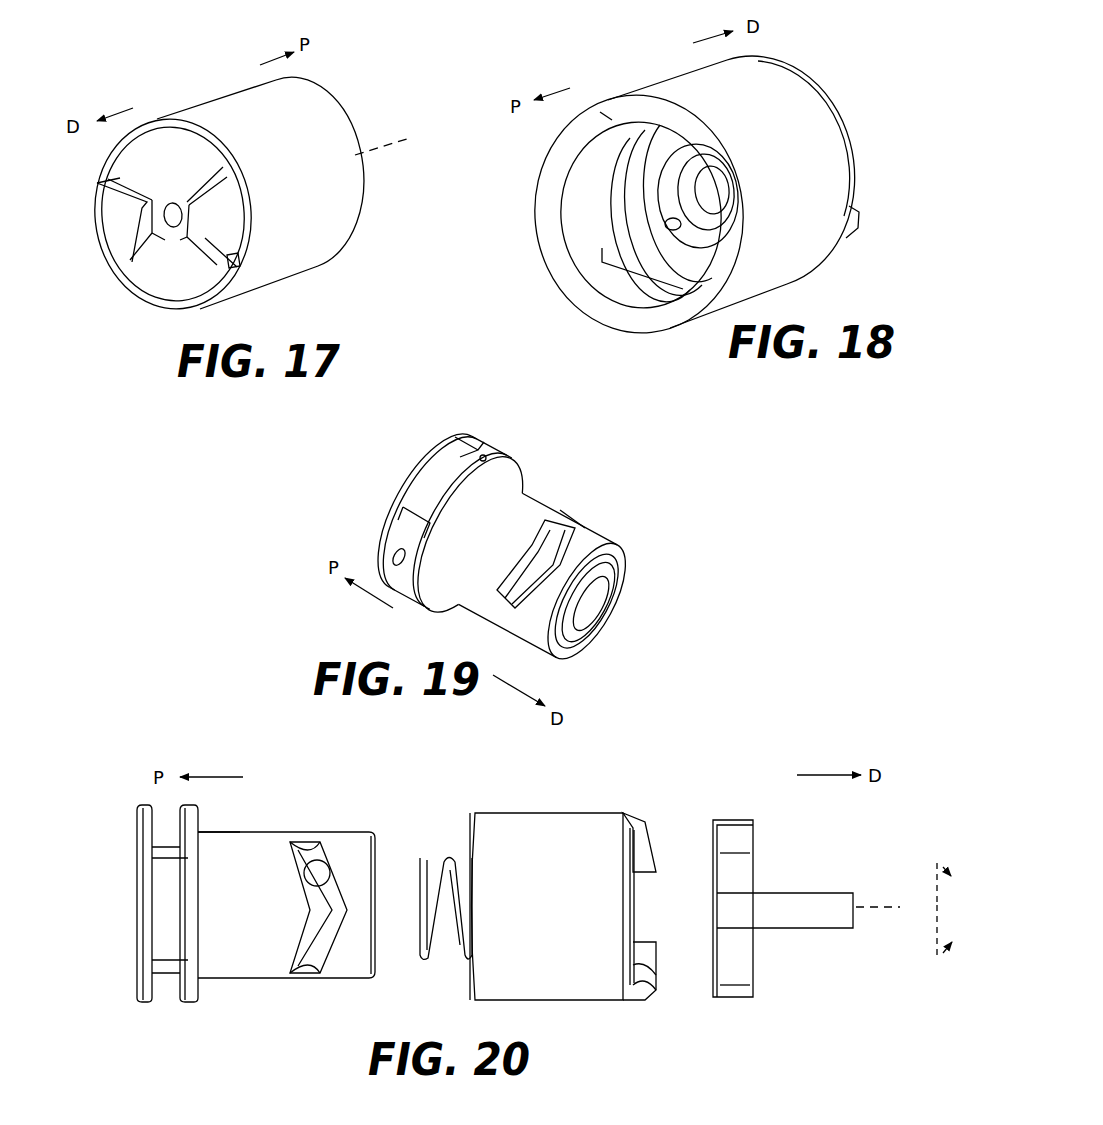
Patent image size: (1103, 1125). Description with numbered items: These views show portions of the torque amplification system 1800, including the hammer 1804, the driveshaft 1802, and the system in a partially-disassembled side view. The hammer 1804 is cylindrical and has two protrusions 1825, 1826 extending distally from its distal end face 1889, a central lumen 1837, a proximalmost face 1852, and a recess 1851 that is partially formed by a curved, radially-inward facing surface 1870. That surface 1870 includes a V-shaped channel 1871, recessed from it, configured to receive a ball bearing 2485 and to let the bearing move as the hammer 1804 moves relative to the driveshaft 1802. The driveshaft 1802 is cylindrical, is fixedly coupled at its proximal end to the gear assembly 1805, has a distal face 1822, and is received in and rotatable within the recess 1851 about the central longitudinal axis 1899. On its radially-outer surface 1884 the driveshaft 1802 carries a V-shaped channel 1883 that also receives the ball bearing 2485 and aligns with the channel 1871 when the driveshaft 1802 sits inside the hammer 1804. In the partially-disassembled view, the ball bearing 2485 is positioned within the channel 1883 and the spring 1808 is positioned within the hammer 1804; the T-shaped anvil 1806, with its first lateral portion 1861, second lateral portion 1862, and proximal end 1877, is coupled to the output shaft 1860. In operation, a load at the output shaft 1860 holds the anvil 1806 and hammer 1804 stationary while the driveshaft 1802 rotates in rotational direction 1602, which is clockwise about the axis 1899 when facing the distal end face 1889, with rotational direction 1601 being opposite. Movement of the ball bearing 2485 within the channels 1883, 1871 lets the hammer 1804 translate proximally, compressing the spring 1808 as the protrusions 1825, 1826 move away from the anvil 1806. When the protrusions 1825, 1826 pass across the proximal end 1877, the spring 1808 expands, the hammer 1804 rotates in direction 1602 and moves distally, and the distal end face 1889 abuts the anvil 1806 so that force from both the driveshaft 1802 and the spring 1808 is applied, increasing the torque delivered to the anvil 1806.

In FIG. 20, the torque amplification system 1800 is at (642, 778).
In FIG. 19, the driveshaft 1802 is at (518, 515).
In FIG. 20, the driveshaft 1802 is at (220, 943).
In FIG. 17, the hammer 1804 is at (313, 258).
In FIG. 18, the hammer 1804 is at (697, 93).
In FIG. 20, the hammer 1804 is at (518, 827).
In FIG. 19, the gear assembly 1805 is at (438, 455).
In FIG. 20, the gear assembly 1805 is at (165, 908).
In FIG. 20, the anvil 1806 is at (592, 992).
In FIG. 20, the spring 1808 is at (430, 870).
In FIG. 19, the distal face 1822 is at (620, 564).
In FIG. 17, the protrusion 1825 is at (110, 230).
In FIG. 18, the protrusion 1825 is at (856, 227).
In FIG. 20, the protrusion 1825 is at (652, 837).
In FIG. 17, the protrusion 1826 is at (205, 238).
In FIG. 20, the protrusion 1826 is at (657, 975).
In FIG. 17, the central lumen 1837 is at (176, 222).
In FIG. 18, the recess 1851 is at (643, 294).
In FIG. 18, the proximalmost face 1852 is at (593, 120).
In FIG. 20, the output shaft 1860 is at (800, 918).
In FIG. 20, the first lateral portion 1861 is at (742, 853).
In FIG. 20, the second lateral portion 1862 is at (740, 985).
In FIG. 18, the radially-inward facing surface 1870 is at (572, 178).
In FIG. 18, the channel 1871 is at (612, 243).
In FIG. 20, the proximal end 1877 is at (705, 984).
In FIG. 19, the V-shaped channel 1883 is at (558, 534).
In FIG. 20, the V-shaped channel 1883 is at (322, 948).
In FIG. 19, the radially-outer surface 1884 is at (598, 543).
In FIG. 20, the radially-outer surface 1884 is at (240, 845).
In FIG. 17, the distal end face 1889 is at (132, 153).
In FIG. 20, the distal end face 1889 is at (640, 934).
In FIG. 17, the central longitudinal axis 1899 is at (392, 143).
In FIG. 20, the central longitudinal axis 1899 is at (880, 905).
In FIG. 20, the ball bearing 2485 is at (318, 868).
In FIG. 20, the rotational direction 1601 is at (937, 957).
In FIG. 20, the rotational direction 1602 is at (935, 870).